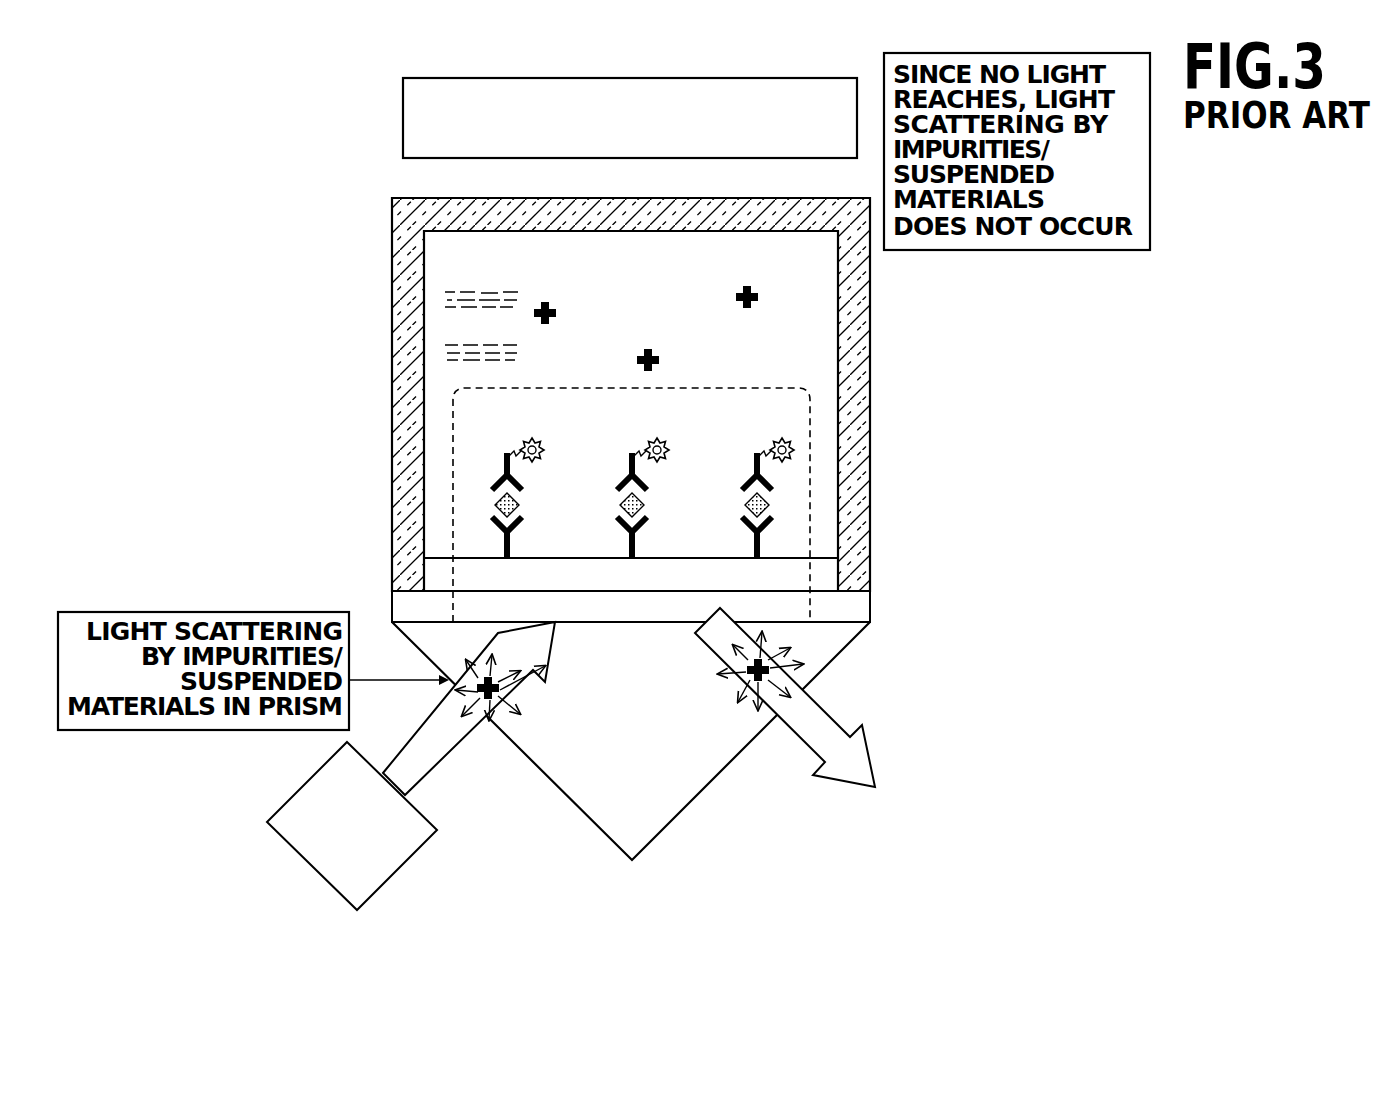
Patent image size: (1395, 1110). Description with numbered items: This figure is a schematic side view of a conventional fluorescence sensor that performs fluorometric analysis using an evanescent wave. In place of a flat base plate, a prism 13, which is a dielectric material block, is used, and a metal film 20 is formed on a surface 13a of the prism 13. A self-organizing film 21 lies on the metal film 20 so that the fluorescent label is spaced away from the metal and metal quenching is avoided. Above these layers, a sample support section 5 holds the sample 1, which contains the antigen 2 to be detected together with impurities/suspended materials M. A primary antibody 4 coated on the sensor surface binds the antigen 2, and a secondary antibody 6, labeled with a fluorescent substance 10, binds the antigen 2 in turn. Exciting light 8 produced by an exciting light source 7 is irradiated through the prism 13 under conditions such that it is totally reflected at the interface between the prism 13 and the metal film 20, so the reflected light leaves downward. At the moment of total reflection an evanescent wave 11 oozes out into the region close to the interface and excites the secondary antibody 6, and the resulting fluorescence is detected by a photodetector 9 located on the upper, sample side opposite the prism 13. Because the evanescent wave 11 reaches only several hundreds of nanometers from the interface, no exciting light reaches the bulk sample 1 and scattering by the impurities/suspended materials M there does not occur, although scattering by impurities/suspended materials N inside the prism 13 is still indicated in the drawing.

The sample 1 is at (453, 355).
The antigen 2 is at (492, 498).
The primary antibody 4 is at (497, 538).
The sample support section 5 is at (392, 242).
The secondary antibody 6 is at (767, 470).
The exciting light source 7 is at (400, 852).
The exciting light 8 is at (430, 757).
The photodetector 9 is at (403, 115).
The fluorescent substance 10 is at (790, 440).
The evanescent wave 11 is at (810, 540).
The prism 13 is at (846, 657).
The prism upper surface 13a is at (430, 622).
The metal film 20 is at (855, 605).
The self-organizing film (SAM) 21 is at (822, 572).
The impurities/suspended materials M is at (755, 284).
The impurity / suspended material in prism N is at (765, 682).